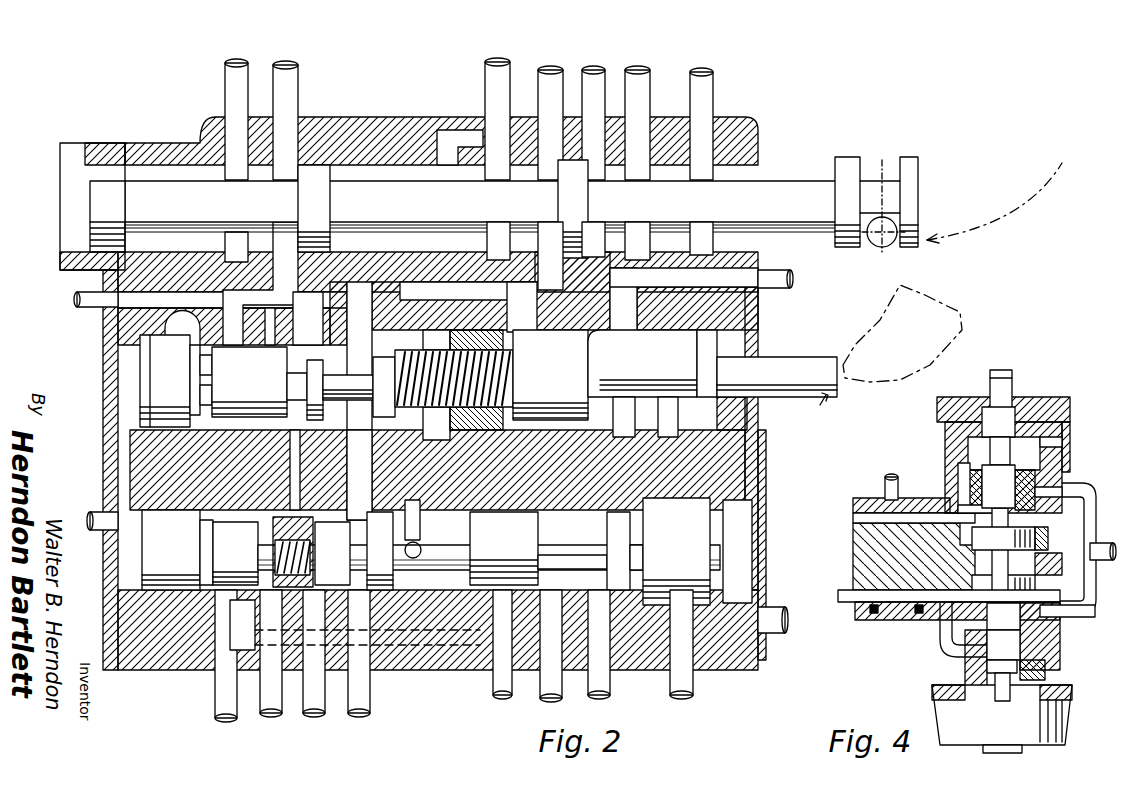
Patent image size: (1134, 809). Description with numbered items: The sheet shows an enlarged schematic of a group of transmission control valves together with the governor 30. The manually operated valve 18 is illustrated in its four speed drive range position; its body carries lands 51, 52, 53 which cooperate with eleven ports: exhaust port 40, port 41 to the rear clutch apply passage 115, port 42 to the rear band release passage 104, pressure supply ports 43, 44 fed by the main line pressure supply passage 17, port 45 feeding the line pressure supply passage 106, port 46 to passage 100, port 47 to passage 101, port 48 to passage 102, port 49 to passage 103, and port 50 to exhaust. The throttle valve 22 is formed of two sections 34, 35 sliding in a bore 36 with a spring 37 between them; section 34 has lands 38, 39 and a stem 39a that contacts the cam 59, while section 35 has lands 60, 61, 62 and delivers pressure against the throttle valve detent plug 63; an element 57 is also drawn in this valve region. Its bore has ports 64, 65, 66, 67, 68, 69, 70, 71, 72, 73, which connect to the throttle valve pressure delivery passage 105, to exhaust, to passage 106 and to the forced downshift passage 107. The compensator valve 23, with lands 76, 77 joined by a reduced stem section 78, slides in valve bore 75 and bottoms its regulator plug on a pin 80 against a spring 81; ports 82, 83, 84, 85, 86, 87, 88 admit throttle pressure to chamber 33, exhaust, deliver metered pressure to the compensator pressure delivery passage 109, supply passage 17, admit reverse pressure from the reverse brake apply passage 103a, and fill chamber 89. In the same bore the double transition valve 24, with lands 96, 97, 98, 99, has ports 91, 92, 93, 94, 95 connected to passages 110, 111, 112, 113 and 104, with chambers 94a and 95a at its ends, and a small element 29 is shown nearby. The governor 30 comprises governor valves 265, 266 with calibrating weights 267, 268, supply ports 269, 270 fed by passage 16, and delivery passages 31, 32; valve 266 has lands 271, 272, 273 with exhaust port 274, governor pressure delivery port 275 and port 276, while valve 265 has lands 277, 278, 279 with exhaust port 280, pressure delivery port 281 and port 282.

In FIG. 4, the passage 16 is at (1100, 560).
In FIG. 2, the main line pressure supply passage 17 is at (493, 80).
In FIG. 2, the manually operated valve 18 is at (840, 157).
In FIG. 2, the throttle valve 22 is at (820, 410).
In FIG. 2, the compensator valve 23 is at (165, 598).
In FIG. 2, the double transition valve 24 is at (748, 495).
In FIG. 2, the ball valve 29 is at (413, 558).
In FIG. 4, the governor 30 is at (936, 441).
In FIG. 4, the passage 31 is at (845, 602).
In FIG. 4, the passage 32 is at (885, 488).
In FIG. 2, the chamber 33 is at (130, 580).
In FIG. 2, the section 34 is at (505, 435).
In FIG. 2, the section 35 is at (282, 485).
In FIG. 2, the bore 36 is at (750, 430).
In FIG. 2, the spring 37 is at (585, 388).
In FIG. 2, the land 38 is at (448, 345).
In FIG. 2, the land 39 is at (720, 345).
In FIG. 2, the stem 39a is at (800, 360).
In FIG. 2, the exhaust port 40 is at (80, 182).
In FIG. 2, the port 41 is at (235, 143).
In FIG. 2, the port 42 is at (290, 135).
In FIG. 2, the pressure supply port 43 is at (438, 150).
In FIG. 2, the pressure supply port 44 is at (492, 130).
In FIG. 2, the port 45 is at (545, 240).
In FIG. 2, the port 46 is at (550, 125).
In FIG. 2, the port 47 is at (600, 240).
In FIG. 2, the port 48 is at (640, 240).
In FIG. 2, the port 49 is at (705, 135).
In FIG. 2, the port 50 is at (748, 170).
In FIG. 2, the land 51 is at (98, 222).
In FIG. 2, the land 52 is at (318, 165).
In FIG. 2, the land 53 is at (572, 185).
In FIG. 2, the piston 57 is at (590, 366).
In FIG. 2, the cam 59 is at (930, 300).
In FIG. 2, the land 60 is at (215, 357).
In FIG. 2, the land 61 is at (300, 360).
In FIG. 2, the land 62 is at (392, 400).
In FIG. 2, the throttle valve detent plug 63 is at (140, 358).
In FIG. 2, the port 64 is at (110, 445).
In FIG. 2, the port 65 is at (160, 322).
In FIG. 2, the port 66 is at (240, 478).
In FIG. 2, the port 67 is at (268, 292).
In FIG. 2, the port 68 is at (322, 400).
In FIG. 2, the port 69 is at (352, 285).
In FIG. 2, the port 70 is at (452, 435).
In FIG. 2, the port 71 is at (522, 320).
In FIG. 2, the port 72 is at (625, 410).
In FIG. 2, the port 73 is at (665, 412).
In FIG. 2, the valve bore 75 is at (470, 645).
In FIG. 2, the land 76 is at (130, 598).
In FIG. 2, the land 77 is at (295, 515).
In FIG. 2, the reduced stem section 78 is at (215, 534).
In FIG. 2, the pin 80 is at (412, 515).
In FIG. 2, the spring 81 is at (305, 515).
In FIG. 2, the port 82 is at (110, 505).
In FIG. 2, the port 83 is at (178, 605).
In FIG. 2, the port 84 is at (218, 690).
In FIG. 2, the port 85 is at (262, 608).
In FIG. 2, the port 86 is at (322, 585).
In FIG. 2, the port 87 is at (383, 515).
In FIG. 2, the port 88 is at (398, 640).
In FIG. 2, the chamber 89 is at (440, 640).
In FIG. 2, the port 91 is at (505, 585).
In FIG. 2, the port 92 is at (540, 650).
In FIG. 2, the port 93 is at (590, 578).
In FIG. 2, the port 94 is at (705, 648).
In FIG. 2, the chamber 94a is at (745, 460).
In FIG. 2, the port 95 is at (755, 655).
In FIG. 2, the chamber 95a is at (762, 530).
In FIG. 2, the land 96 is at (485, 532).
In FIG. 2, the land 97 is at (622, 530).
In FIG. 2, the land 98 is at (655, 640).
In FIG. 2, the land 99 is at (742, 568).
In FIG. 2, the passage 100 is at (548, 80).
In FIG. 2, the passage 101 is at (592, 80).
In FIG. 2, the passage 102 is at (640, 80).
In FIG. 2, the passage 103 is at (705, 90).
In FIG. 2, the reverse brake apply passage 103a is at (312, 705).
In FIG. 2, the rear band release passage 104 is at (283, 80).
In FIG. 2, the throttle valve pressure delivery passage 105 is at (78, 296).
In FIG. 2, the line pressure supply passage 106 is at (395, 280).
In FIG. 2, the forced downshift passage 107 is at (790, 280).
In FIG. 2, the compensator pressure delivery passage 109 is at (222, 705).
In FIG. 2, the passage 110 is at (497, 695).
In FIG. 2, the passage 111 is at (548, 698).
In FIG. 2, the passage 112 is at (605, 695).
In FIG. 2, the passage 113 is at (686, 695).
In FIG. 2, the rear clutch apply passage 115 is at (232, 102).
In FIG. 4, the governor valve 265 is at (1030, 452).
In FIG. 4, the governor valve 266 is at (987, 668).
In FIG. 4, the calibrating weight 267 is at (1012, 375).
In FIG. 4, the calibrating weight 268 is at (1065, 725).
In FIG. 4, the pressure supply port 269 is at (1060, 490).
In FIG. 4, the pressure supply port 270 is at (1050, 620).
In FIG. 4, the land 271 is at (975, 580).
In FIG. 4, the land 272 is at (1040, 650).
In FIG. 4, the land 273 is at (1000, 702).
In FIG. 4, the exhaust port 274 is at (1050, 672).
In FIG. 4, the governor pressure delivery port 275 is at (965, 648).
In FIG. 4, the port 276 is at (942, 620).
In FIG. 4, the land 277 is at (1013, 415).
In FIG. 4, the land 278 is at (1030, 472).
In FIG. 4, the land 279 is at (975, 555).
In FIG. 4, the exhaust port 280 is at (1060, 438).
In FIG. 4, the pressure delivery port 281 is at (960, 466).
In FIG. 4, the port 282 is at (960, 515).